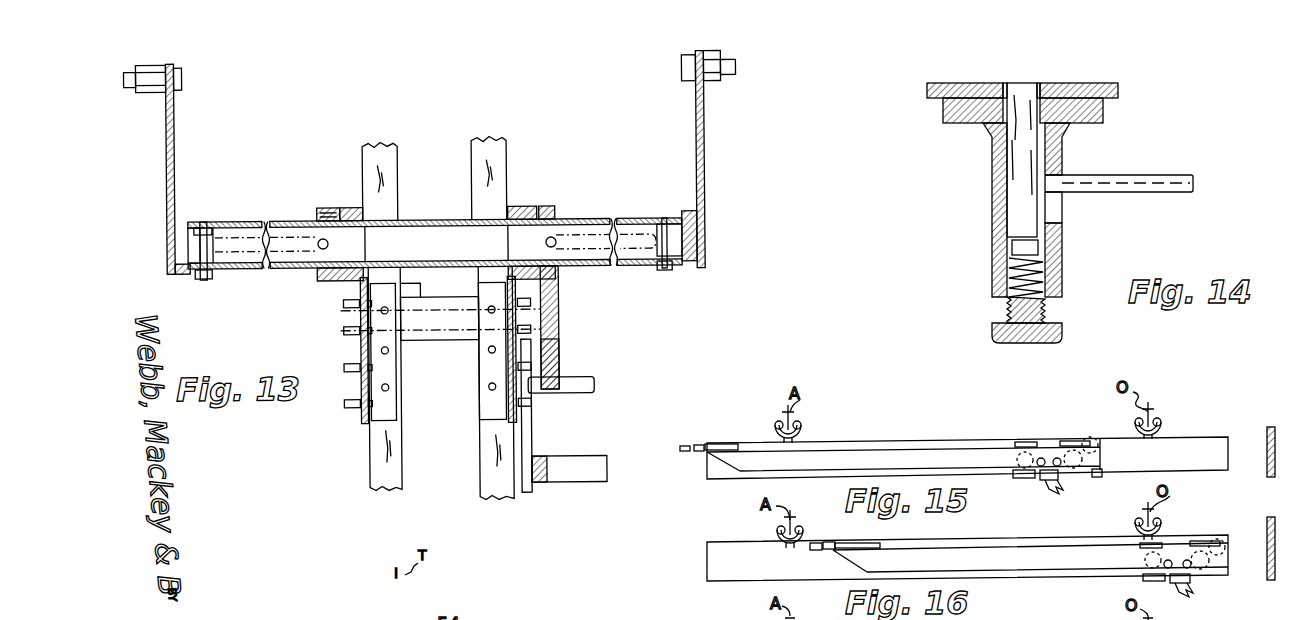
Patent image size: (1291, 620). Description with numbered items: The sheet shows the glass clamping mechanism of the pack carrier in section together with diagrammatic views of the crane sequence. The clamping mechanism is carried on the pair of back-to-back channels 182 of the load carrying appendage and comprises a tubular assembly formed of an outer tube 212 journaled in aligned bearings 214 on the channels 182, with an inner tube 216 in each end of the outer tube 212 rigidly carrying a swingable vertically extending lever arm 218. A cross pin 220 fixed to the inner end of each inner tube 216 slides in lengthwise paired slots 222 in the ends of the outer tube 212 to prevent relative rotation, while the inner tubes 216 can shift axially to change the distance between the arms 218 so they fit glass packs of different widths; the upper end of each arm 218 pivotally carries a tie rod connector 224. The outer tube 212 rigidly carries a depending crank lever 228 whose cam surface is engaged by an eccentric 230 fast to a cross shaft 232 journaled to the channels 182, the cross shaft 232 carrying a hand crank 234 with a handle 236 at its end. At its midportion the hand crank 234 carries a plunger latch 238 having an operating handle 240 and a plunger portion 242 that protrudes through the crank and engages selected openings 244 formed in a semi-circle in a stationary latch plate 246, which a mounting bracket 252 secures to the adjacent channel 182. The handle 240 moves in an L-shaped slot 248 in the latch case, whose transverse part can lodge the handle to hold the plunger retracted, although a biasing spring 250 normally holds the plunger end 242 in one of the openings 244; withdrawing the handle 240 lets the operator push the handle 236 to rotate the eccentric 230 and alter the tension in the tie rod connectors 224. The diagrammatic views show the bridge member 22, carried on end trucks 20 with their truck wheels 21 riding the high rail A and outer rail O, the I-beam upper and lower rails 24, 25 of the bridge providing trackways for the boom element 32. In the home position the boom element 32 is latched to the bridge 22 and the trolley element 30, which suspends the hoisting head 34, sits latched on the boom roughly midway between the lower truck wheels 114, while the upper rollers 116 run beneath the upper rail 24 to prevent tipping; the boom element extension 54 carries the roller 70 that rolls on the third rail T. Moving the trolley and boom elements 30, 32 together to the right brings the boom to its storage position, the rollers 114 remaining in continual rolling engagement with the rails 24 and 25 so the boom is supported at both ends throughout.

In FIG. 15, the end truck 20 is at (803, 427).
In FIG. 16, the end truck 20 is at (969, 535).
In FIG. 15, the trolley wheel 21 is at (782, 424).
In FIG. 16, the trolley wheel 21 is at (969, 518).
In FIG. 15, the bridge member 22 is at (1260, 440).
In FIG. 16, the bridge member 22 is at (1262, 554).
In FIG. 15, the upper rail 24 is at (1082, 431).
In FIG. 15, the lower rail 25 is at (1185, 471).
In FIG. 15, the trolley element 30 is at (1041, 458).
In FIG. 16, the trolley element 30 is at (1169, 560).
In FIG. 15, the boom element 32 is at (719, 466).
In FIG. 16, the boom element 32 is at (1008, 562).
In FIG. 15, the hoisting head 34 is at (1052, 482).
In FIG. 15, the boom element extension 54 is at (721, 452).
In FIG. 16, the boom element extension 54 is at (871, 548).
In FIG. 15, the roller 70 is at (686, 446).
In FIG. 16, the roller 70 is at (822, 546).
In FIG. 15, the rollers 114 is at (1100, 486).
In FIG. 15, the upper roller 116 is at (1091, 439).
In FIG. 13, the channels 182 is at (472, 152).
In FIG. 13, the outer tube 212 is at (236, 220).
In FIG. 13, the bearings 214 is at (347, 207).
In FIG. 13, the inner tube 216 is at (256, 263).
In FIG. 13, the lever arm 218 is at (176, 162).
In FIG. 13, the cross pin 220 is at (553, 237).
In FIG. 13, the slots 222 is at (303, 219).
In FIG. 13, the tie rod connector 224 is at (152, 92).
In FIG. 13, the crank lever 228 is at (560, 346).
In FIG. 13, the eccentric 230 is at (560, 293).
In FIG. 13, the cross shaft 232 is at (548, 318).
In FIG. 13, the hand crank 234 is at (529, 440).
In FIG. 14, the hand crank 234 is at (943, 110).
In FIG. 13, the handle 236 is at (586, 484).
In FIG. 13, the plunger latch 238 is at (593, 392).
In FIG. 14, the plunger latch 238 is at (992, 337).
In FIG. 13, the operating handle 240 is at (556, 393).
In FIG. 14, the operating handle 240 is at (1169, 175).
In FIG. 13, the plunger portion 242 is at (488, 386).
In FIG. 14, the plunger portion 242 is at (1025, 88).
In FIG. 13, the openings 244 is at (492, 396).
In FIG. 14, the openings 244 is at (1003, 85).
In FIG. 13, the latch plate 246 is at (482, 431).
In FIG. 14, the latch plate 246 is at (1074, 88).
In FIG. 13, the L-shaped slot 248 is at (566, 398).
In FIG. 14, the L-shaped slot 248 is at (1062, 206).
In FIG. 14, the biasing spring 250 is at (1006, 274).
In FIG. 13, the mounting bracket 252 is at (482, 285).